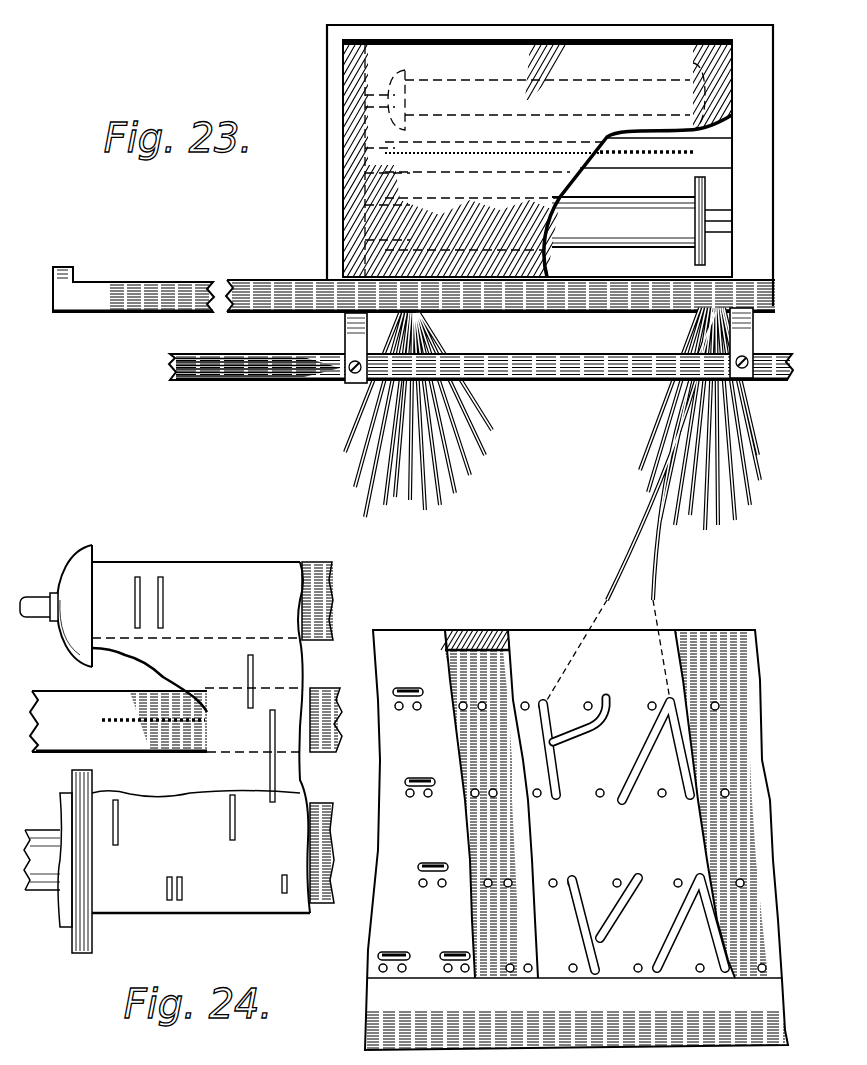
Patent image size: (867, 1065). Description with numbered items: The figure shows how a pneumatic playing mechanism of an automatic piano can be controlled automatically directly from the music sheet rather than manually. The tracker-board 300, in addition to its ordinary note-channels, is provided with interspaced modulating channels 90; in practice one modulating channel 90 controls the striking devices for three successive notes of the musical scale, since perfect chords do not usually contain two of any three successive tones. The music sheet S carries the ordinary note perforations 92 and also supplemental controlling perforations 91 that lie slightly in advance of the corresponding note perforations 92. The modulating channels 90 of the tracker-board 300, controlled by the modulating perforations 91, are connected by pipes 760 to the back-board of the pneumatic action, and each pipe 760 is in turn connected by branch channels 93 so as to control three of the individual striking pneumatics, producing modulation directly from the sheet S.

In FIG. 23, the tracker-board 300 is at (690, 162).
In FIG. 24, the tracker-board 300 is at (186, 720).
In FIG. 23, the pipes 760 is at (450, 483).
In FIG. 24, the modulating channels 90 is at (137, 724).
In FIG. 24, the supplemental controlling perforations 91 is at (135, 577).
In FIG. 24, the note perforations 92 is at (162, 580).
In FIG. 24, the branch channels 93 is at (597, 727).
In FIG. 24, the music sheet S is at (177, 749).